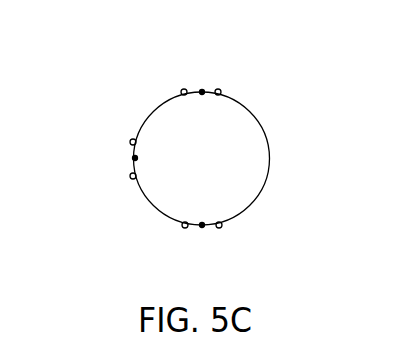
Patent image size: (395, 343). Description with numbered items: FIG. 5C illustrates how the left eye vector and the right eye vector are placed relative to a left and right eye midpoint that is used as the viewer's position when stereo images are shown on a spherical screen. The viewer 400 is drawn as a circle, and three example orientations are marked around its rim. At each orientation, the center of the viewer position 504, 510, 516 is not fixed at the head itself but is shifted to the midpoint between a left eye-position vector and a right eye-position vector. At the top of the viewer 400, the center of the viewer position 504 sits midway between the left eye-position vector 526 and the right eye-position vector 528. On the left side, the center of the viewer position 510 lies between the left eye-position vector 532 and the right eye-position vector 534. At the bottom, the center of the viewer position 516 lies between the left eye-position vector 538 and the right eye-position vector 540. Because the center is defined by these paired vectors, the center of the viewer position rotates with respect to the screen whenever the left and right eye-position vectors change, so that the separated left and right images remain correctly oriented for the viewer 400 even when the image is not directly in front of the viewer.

The viewer 400 is at (266, 132).
The center of the viewer position 504 is at (201, 89).
The center of the viewer position 510 is at (132, 158).
The center of the viewer position 516 is at (202, 227).
The left eye-position vector 526 is at (181, 89).
The right eye-position vector 528 is at (221, 91).
The left eye-position vector 532 is at (130, 178).
The right eye-position vector 534 is at (130, 141).
The left eye-position vector 538 is at (221, 227).
The right eye-position vector 540 is at (183, 227).